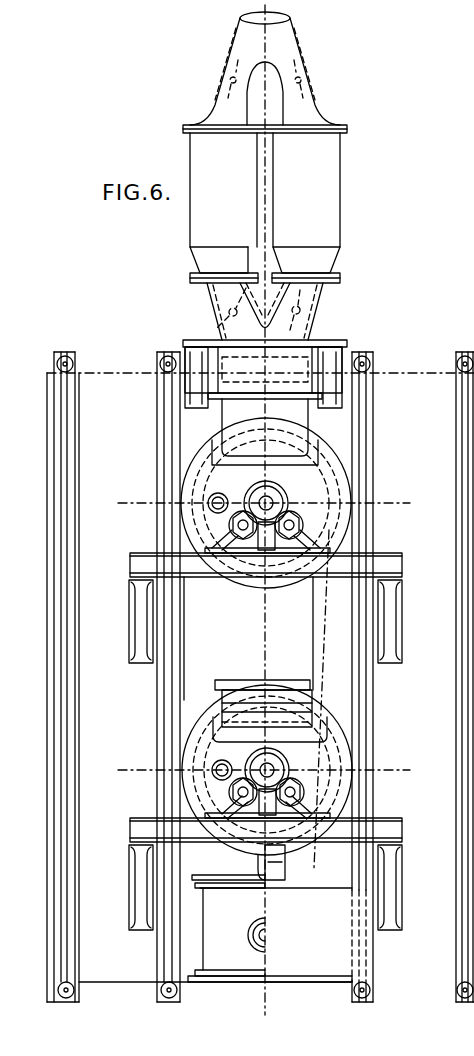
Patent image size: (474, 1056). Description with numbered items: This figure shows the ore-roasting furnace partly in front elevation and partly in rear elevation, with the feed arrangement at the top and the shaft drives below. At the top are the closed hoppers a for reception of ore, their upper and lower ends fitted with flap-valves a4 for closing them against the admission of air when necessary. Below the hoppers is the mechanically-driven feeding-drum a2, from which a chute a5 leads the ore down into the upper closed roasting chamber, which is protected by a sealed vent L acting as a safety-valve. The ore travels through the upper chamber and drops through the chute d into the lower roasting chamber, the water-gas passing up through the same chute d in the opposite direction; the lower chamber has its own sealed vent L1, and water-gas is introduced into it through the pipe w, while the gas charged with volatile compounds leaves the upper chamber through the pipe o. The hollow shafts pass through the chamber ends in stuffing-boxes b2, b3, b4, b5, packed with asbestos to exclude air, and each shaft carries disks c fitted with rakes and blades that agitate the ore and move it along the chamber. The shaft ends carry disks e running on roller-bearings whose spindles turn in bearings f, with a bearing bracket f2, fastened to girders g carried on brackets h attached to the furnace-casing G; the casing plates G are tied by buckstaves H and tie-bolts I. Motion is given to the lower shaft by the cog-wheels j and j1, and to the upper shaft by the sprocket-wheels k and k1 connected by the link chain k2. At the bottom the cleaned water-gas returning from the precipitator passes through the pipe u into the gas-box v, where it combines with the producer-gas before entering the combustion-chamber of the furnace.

The closed hopper a is at (265, 179).
The feeding-drum a2 is at (298, 365).
The flap-valve a4 is at (334, 302).
The feed chute a5 is at (265, 432).
The sealed vent L is at (265, 407).
The sealed vent L1 is at (228, 684).
The buckstave H is at (53, 657).
The tie-bolt I is at (65, 357).
The furnace-casing G is at (264, 723).
The girder g is at (212, 578).
The bracket h is at (402, 626).
The chute d is at (248, 638).
The disk c is at (266, 515).
The stuffing-box b2 is at (221, 496).
The stuffing-box b3 is at (284, 505).
The stuffing-box b4 is at (284, 768).
The stuffing-box b5 is at (228, 762).
The pipe o is at (211, 510).
The pipe w is at (211, 770).
The disk e is at (300, 523).
The bearing f is at (325, 795).
The roller bracket f2 is at (326, 542).
The sprocket-wheel k is at (284, 868).
The sprocket-wheel k1 is at (330, 521).
The link chain k2 is at (322, 637).
The cog-wheel j is at (310, 838).
The cog-wheel j1 is at (273, 882).
The gas-box v is at (215, 932).
The pipe u is at (260, 946).